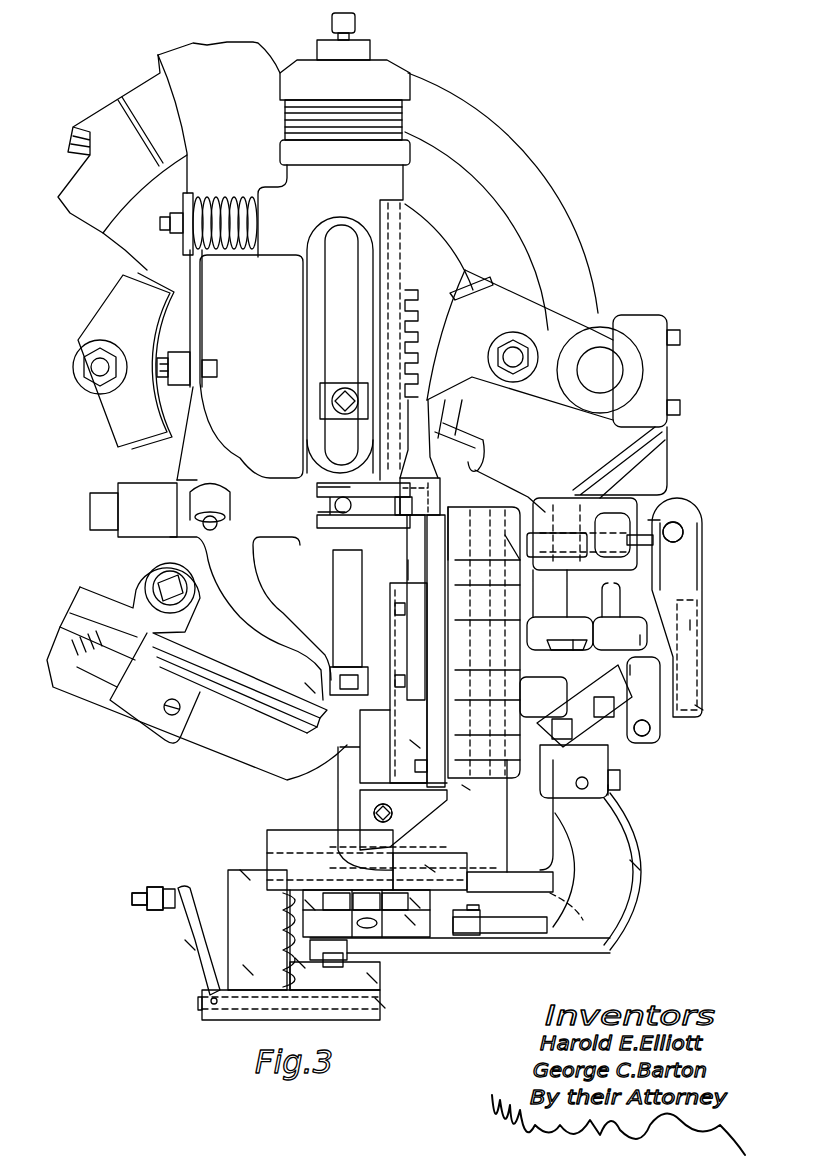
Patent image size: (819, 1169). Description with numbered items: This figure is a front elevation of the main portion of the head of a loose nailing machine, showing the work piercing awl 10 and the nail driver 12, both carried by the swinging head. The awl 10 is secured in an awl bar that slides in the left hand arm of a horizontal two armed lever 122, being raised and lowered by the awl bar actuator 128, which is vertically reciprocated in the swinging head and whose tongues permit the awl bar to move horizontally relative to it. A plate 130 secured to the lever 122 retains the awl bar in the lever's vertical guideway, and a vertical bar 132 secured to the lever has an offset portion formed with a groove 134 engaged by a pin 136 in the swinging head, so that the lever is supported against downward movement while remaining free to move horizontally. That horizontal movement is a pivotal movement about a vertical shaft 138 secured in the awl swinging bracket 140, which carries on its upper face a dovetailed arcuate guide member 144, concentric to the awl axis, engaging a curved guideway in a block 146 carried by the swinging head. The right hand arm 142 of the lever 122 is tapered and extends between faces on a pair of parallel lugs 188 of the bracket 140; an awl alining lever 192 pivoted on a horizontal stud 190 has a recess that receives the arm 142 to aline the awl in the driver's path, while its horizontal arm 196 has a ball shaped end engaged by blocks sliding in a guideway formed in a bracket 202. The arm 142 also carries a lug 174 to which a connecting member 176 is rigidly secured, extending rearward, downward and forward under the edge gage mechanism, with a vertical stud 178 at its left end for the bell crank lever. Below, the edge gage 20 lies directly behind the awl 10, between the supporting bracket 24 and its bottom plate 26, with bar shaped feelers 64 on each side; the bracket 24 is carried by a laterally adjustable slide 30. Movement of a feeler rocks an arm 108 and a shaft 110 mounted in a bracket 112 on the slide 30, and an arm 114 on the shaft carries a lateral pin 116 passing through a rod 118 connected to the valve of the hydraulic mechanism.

The work piercing awl 10 is at (395, 818).
The nail driver 12 is at (310, 688).
The edge gage 20 is at (430, 870).
The supporting bracket 24 is at (420, 905).
The bottom plate 26 is at (408, 920).
The slide 30 is at (245, 875).
The feeler 64 is at (458, 880).
The arm 108 is at (372, 978).
The shaft 110 is at (380, 1003).
The bracket 112 is at (248, 970).
The arm 114 is at (190, 945).
The lateral pin 116 is at (134, 895).
The rod 118 is at (160, 887).
The two armed lever 122 is at (468, 787).
The awl bar actuator 128 is at (425, 463).
The plate 130 is at (415, 745).
The vertical bar 132 is at (408, 570).
The groove 134 is at (318, 512).
The pin 136 is at (318, 492).
The vertical shaft 138 is at (510, 535).
The awl swinging bracket 140 is at (630, 670).
The right hand arm 142 is at (652, 735).
The arcuate guide member 144 is at (573, 648).
The block 146 is at (640, 640).
The lug 174 is at (613, 790).
The connecting member 176 is at (635, 865).
The vertical stud 178 is at (300, 963).
The lugs 188 is at (700, 710).
The horizontal stud 190 is at (683, 538).
The awl alining lever 192 is at (690, 625).
The horizontal arm 196 is at (660, 520).
The bracket 202 is at (640, 498).